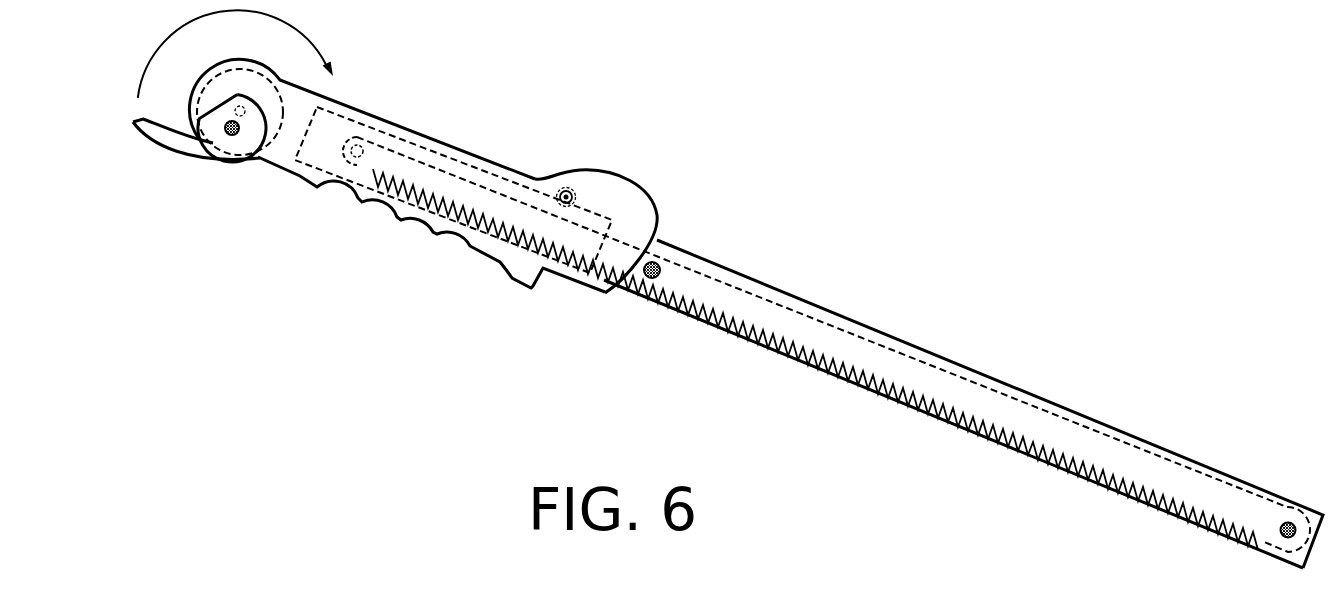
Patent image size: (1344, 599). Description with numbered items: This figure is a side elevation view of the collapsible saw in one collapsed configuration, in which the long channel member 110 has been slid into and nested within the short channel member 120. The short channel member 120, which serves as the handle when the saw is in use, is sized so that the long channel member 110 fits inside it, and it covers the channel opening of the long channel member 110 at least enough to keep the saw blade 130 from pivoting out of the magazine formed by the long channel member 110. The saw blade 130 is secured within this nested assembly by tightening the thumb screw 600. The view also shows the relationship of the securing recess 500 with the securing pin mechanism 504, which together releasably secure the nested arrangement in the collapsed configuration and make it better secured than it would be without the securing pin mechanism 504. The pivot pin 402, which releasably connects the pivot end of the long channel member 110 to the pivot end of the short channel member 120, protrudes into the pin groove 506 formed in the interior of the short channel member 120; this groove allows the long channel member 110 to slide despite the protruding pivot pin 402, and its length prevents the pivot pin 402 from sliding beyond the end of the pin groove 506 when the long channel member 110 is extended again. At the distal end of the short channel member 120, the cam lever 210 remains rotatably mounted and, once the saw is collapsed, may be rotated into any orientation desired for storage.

The long channel member 110 is at (857, 385).
The short channel member 120 is at (300, 176).
The saw blade 130 is at (853, 330).
The cam lever 210 is at (153, 147).
The pivot pin 402 is at (368, 160).
The securing recess 500 is at (552, 182).
The securing pin mechanism 504 is at (573, 193).
The pin groove 506 is at (417, 165).
The thumb screw 600 is at (662, 267).